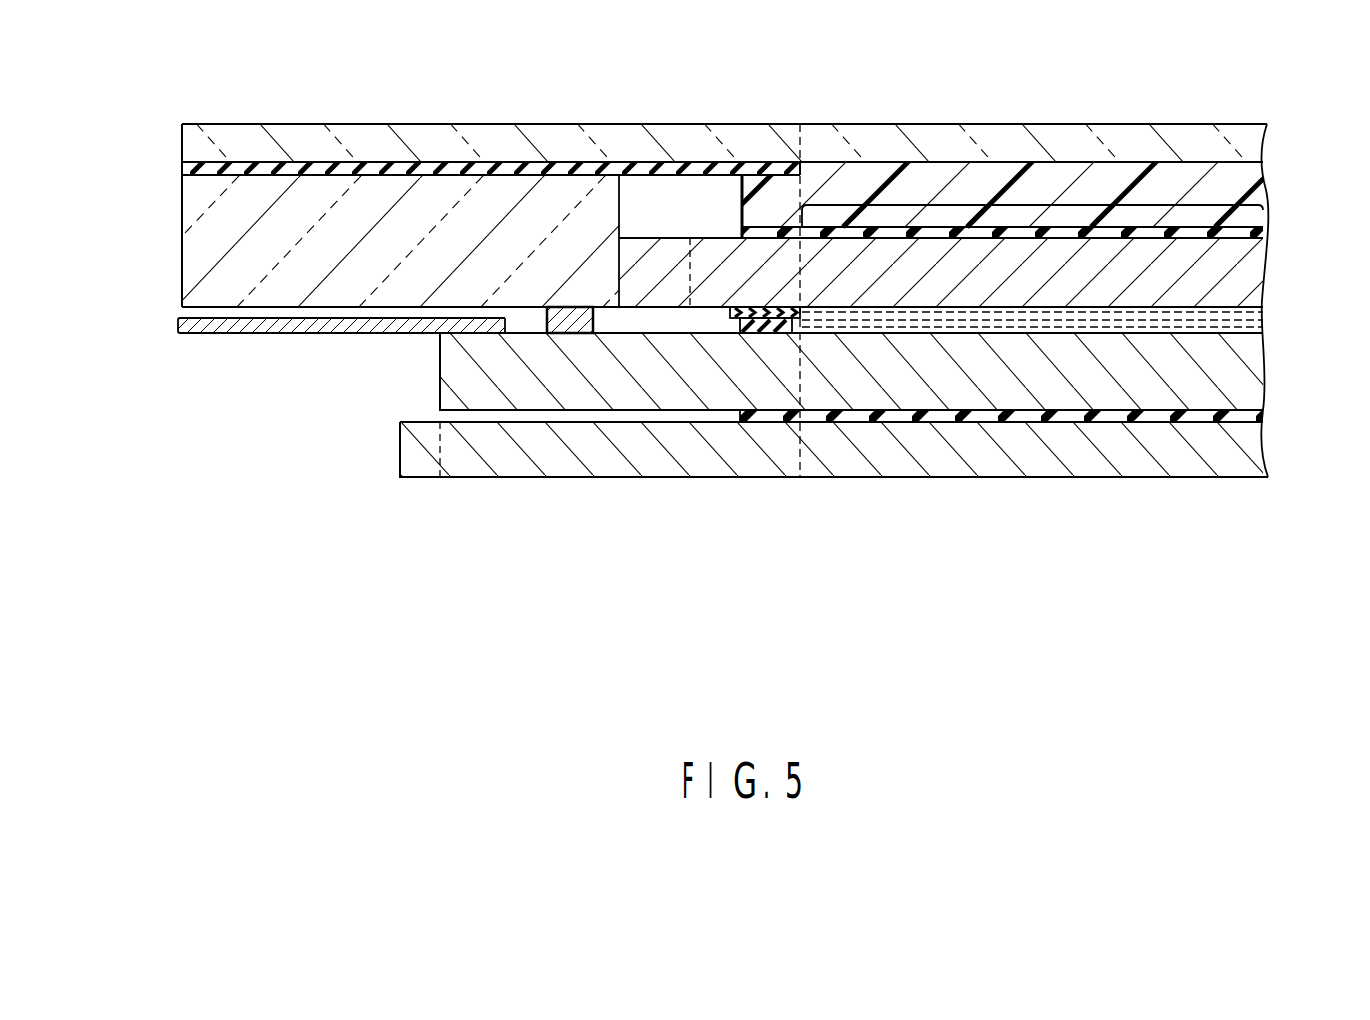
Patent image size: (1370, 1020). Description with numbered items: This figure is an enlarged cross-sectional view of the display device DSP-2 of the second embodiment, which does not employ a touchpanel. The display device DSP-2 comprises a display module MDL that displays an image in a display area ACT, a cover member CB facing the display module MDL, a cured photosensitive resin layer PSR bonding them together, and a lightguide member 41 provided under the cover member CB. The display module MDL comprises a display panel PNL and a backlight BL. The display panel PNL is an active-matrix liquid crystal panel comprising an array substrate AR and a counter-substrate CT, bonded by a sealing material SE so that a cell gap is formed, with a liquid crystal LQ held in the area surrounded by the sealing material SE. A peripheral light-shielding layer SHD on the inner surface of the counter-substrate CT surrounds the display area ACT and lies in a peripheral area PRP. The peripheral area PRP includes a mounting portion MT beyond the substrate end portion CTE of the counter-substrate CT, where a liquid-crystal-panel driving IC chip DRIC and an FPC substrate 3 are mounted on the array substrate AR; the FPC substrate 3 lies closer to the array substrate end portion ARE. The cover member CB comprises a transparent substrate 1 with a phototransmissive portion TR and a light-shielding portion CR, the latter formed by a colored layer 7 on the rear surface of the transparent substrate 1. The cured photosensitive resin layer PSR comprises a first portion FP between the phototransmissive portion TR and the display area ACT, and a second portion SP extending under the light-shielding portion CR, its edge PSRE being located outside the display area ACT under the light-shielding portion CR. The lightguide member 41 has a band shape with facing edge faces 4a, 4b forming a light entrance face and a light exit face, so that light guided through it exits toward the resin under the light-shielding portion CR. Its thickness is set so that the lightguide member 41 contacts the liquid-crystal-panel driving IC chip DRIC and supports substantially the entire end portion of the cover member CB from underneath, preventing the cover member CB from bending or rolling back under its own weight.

The transparent substrate 1 is at (1258, 143).
The cover member CB is at (180, 143).
The colored layer 7 is at (185, 167).
The edge face 4a is at (182, 245).
The lightguide member 41 is at (200, 298).
The FPC substrate 3 is at (268, 337).
The light-shielding portion CR is at (800, 118).
The phototransmissive portion TR is at (1268, 118).
The edge face 4b is at (622, 197).
The first portion FP is at (947, 177).
The second portion SP is at (770, 197).
The display area ACT is at (1036, 193).
The cured photosensitive resin layer PSR is at (967, 217).
The counter-substrate CT is at (907, 290).
The edge PSRE is at (742, 212).
The mounting portion MT is at (530, 316).
The liquid-crystal-panel driving IC chip DRIC is at (568, 323).
The substrate end portion CTE is at (603, 310).
The peripheral light-shielding layer SHD is at (752, 310).
The sealing material SE is at (767, 323).
The liquid crystal LQ is at (853, 320).
The array substrate end portion ARE is at (430, 370).
The array substrate AR is at (825, 390).
The display panel PNL is at (426, 415).
The backlight BL is at (1246, 468).
The display module MDL is at (1276, 227).
The peripheral area PRP is at (800, 530).
The display device DSP-2 is at (676, 608).